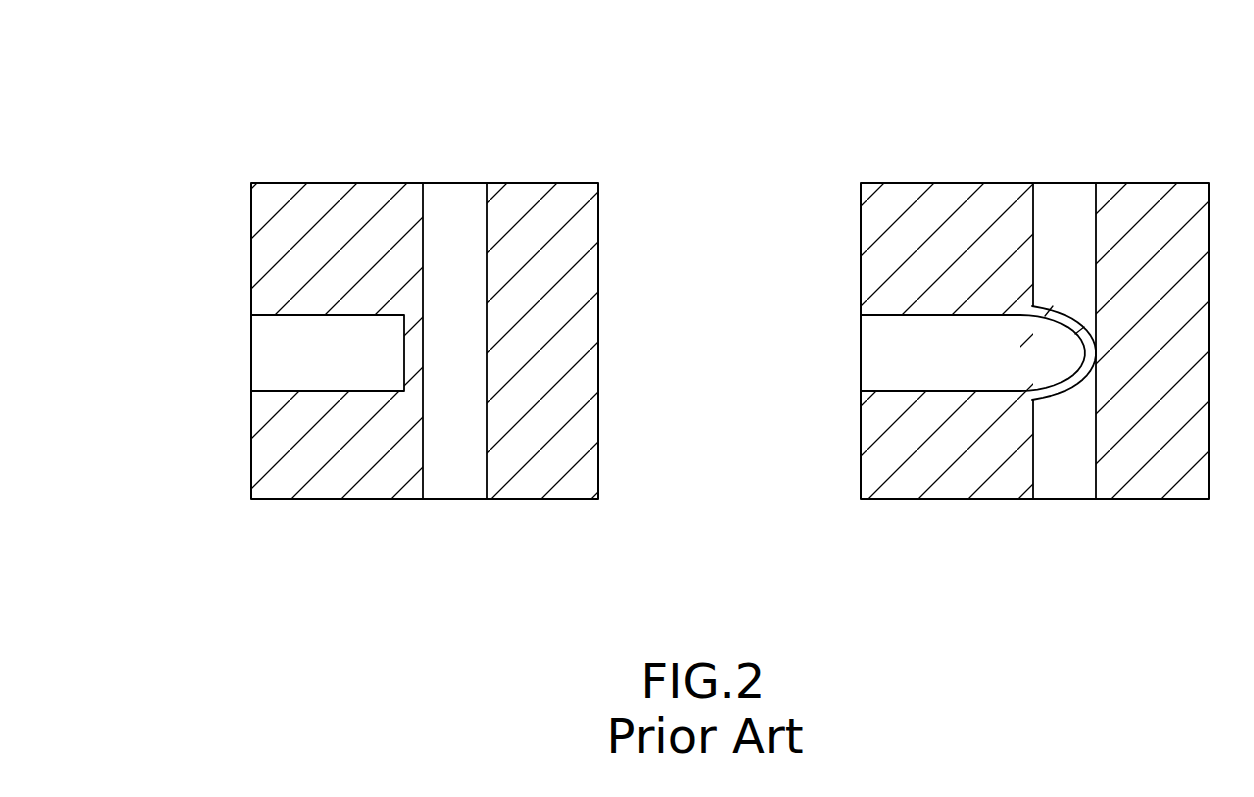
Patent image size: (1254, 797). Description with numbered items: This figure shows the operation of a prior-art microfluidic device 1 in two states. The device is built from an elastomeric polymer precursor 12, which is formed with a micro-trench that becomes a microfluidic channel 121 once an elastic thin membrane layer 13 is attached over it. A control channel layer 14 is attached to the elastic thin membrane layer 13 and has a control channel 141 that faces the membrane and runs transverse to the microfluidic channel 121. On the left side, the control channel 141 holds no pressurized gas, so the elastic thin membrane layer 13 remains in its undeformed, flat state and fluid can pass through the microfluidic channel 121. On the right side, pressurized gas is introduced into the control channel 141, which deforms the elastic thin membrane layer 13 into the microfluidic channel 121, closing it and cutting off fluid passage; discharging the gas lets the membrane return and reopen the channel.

The microfluidic device 1 is at (586, 142).
The elastomeric polymer precursor 12 is at (525, 168).
The microfluidic channel 121 is at (451, 190).
The elastic thin membrane layer 13 is at (413, 335).
The control channel layer 14 is at (232, 473).
The control channel 141 is at (267, 348).